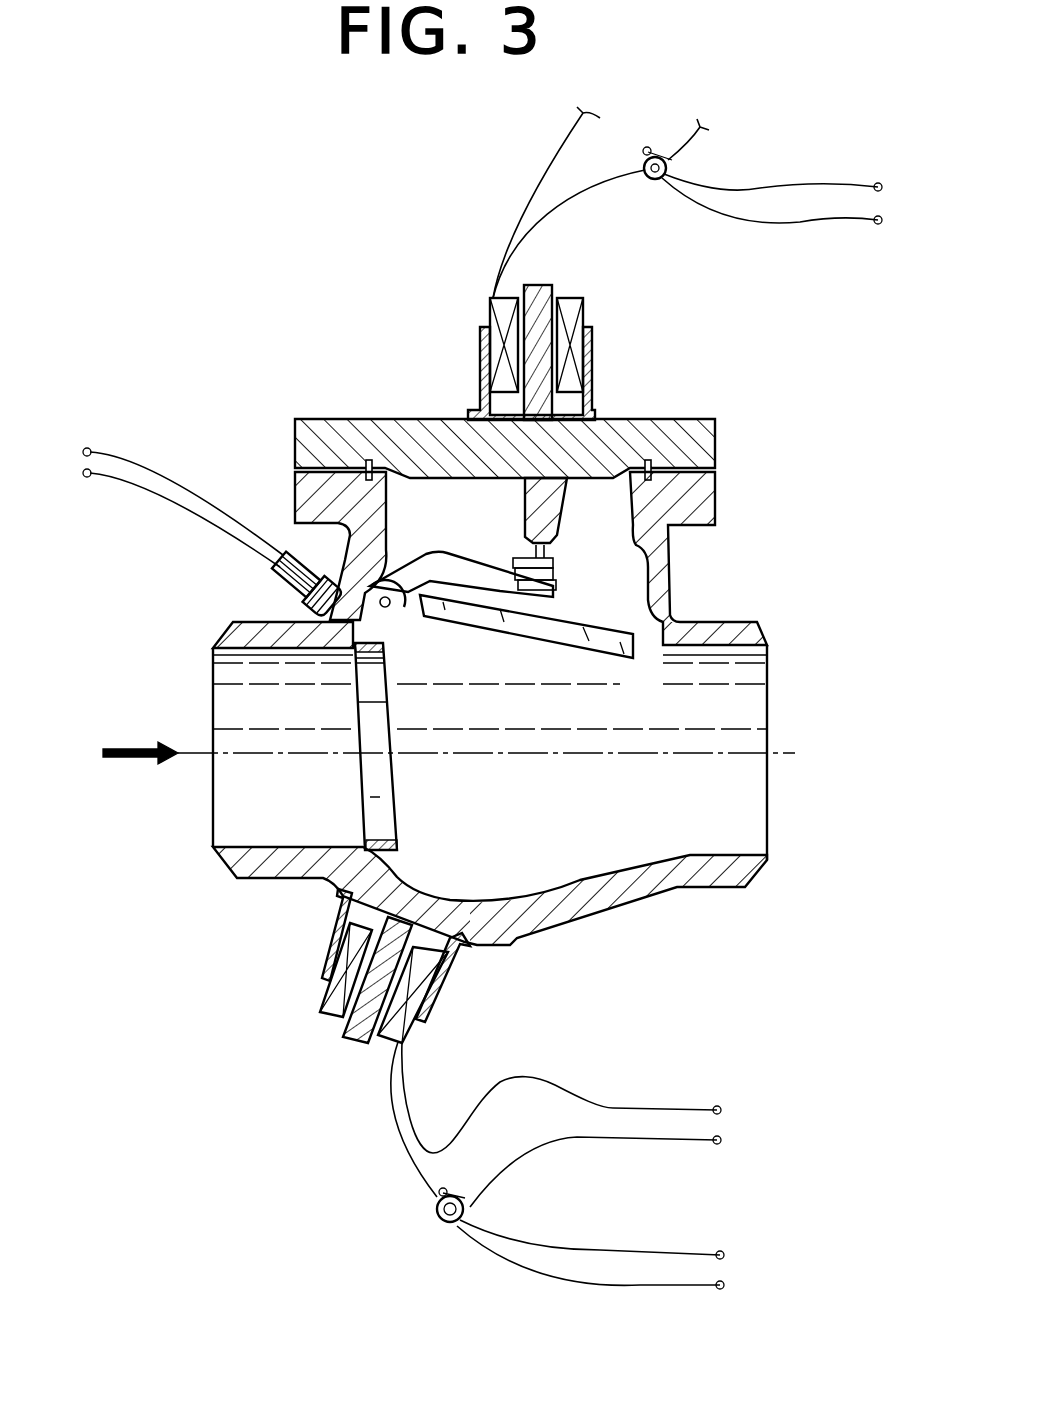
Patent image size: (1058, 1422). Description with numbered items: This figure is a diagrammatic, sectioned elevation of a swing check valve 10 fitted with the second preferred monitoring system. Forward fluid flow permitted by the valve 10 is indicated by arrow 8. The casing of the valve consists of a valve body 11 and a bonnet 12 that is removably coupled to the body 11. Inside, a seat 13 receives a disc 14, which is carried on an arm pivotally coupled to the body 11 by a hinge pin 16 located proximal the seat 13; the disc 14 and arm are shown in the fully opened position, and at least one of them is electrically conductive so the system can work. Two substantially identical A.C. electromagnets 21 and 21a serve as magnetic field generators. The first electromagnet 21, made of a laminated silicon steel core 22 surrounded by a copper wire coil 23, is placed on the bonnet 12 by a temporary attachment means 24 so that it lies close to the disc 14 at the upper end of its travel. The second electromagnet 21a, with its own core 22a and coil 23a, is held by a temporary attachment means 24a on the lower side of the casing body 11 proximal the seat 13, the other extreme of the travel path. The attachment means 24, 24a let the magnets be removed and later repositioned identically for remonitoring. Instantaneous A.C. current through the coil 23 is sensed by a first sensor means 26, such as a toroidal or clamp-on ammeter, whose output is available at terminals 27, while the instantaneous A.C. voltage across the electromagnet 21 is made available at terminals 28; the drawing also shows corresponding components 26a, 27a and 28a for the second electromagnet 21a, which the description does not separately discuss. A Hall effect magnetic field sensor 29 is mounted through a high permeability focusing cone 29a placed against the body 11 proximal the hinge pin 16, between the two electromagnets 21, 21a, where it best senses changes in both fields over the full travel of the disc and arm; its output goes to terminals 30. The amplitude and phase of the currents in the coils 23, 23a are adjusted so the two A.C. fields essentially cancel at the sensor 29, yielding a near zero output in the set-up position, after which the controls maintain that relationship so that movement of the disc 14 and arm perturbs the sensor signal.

The arrow 8 is at (133, 745).
The check valve 10 is at (210, 632).
The valve body 11 is at (714, 505).
The bonnet 12 is at (714, 445).
The seat 13 is at (400, 852).
The disc 14 is at (612, 652).
The hinge pin 16 is at (392, 612).
The A.C. electromagnet 21 is at (480, 313).
The core 22 is at (549, 285).
The coil 23 is at (586, 310).
The temporary attachment means 24 is at (476, 391).
The first sensor means 26 is at (619, 222).
The terminals 27 is at (791, 199).
The terminals 28 is at (601, 202).
The magnetic field sensor 29 is at (280, 573).
The focusing cone 29a is at (313, 598).
The terminals 30 is at (169, 506).
The second A.C. electromagnet 21a is at (420, 1041).
The core 22a is at (345, 1040).
The coil 23a is at (320, 1011).
The temporary attachment means 24a is at (470, 961).
The connector (lower) 26a is at (470, 1210).
The output leads (lower) 27a is at (617, 1254).
The input leads (lower) 28a is at (588, 1124).